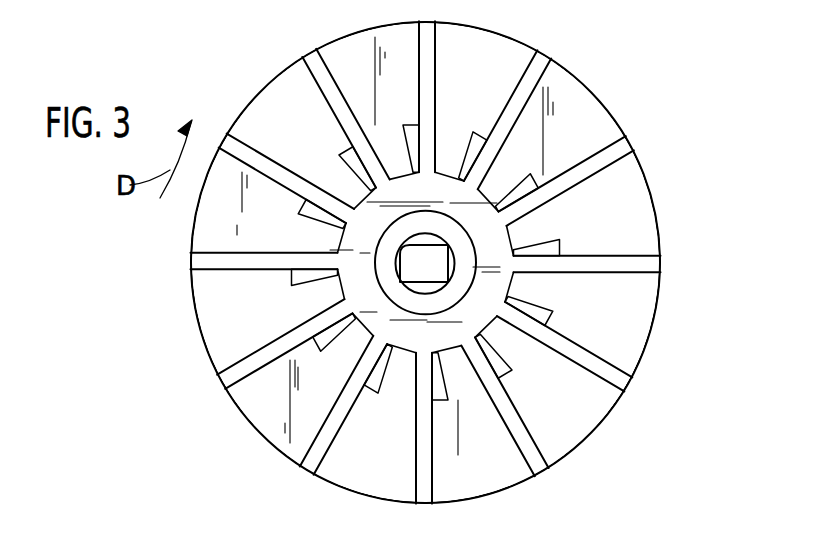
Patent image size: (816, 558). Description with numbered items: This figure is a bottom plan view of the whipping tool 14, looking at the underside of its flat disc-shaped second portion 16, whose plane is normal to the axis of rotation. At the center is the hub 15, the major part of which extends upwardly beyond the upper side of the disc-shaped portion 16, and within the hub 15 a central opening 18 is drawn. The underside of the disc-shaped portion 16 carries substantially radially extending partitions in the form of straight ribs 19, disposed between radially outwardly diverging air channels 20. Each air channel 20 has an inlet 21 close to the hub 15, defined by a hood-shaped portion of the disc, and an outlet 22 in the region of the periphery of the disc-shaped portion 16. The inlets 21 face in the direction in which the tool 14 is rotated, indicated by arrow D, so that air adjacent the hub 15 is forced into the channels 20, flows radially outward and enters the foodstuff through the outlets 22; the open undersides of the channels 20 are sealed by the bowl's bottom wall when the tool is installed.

The whipping tool 14 is at (188, 332).
The hub 15 is at (435, 263).
The disc-shaped second portion 16 is at (661, 321).
The shaft bore 18 is at (416, 279).
The straight ribs 19 is at (320, 70).
The air channels 20 is at (207, 283).
The inlet 21 is at (313, 212).
The outlet 22 is at (520, 34).